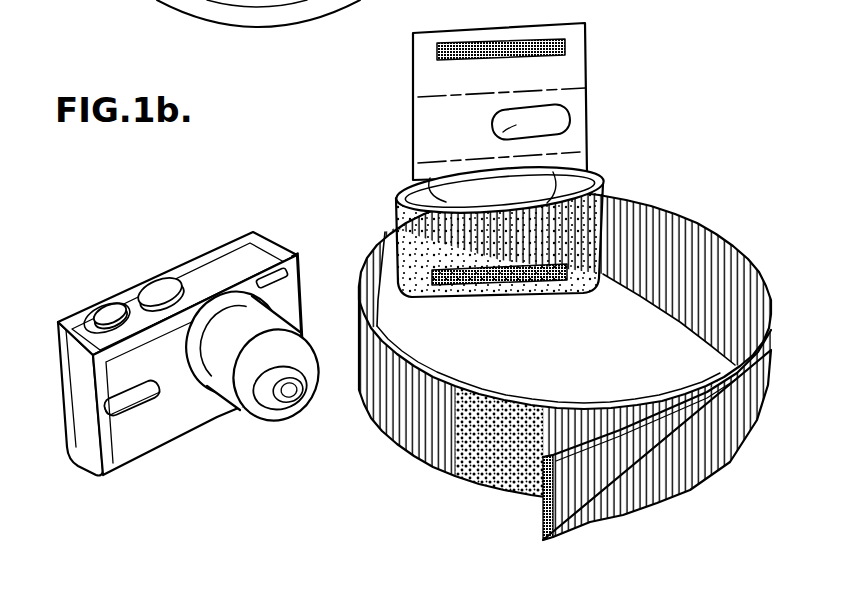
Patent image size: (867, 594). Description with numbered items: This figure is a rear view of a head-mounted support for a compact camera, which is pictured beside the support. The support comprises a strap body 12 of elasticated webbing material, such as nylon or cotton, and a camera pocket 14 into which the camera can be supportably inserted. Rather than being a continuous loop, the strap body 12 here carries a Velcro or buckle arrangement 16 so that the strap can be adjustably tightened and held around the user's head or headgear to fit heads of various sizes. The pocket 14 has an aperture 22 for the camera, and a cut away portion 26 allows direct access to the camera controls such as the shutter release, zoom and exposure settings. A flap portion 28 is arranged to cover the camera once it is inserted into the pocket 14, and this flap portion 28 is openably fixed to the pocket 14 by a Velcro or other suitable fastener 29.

The strap body 12 is at (565, 361).
The camera pocket 14 is at (518, 226).
The Velcro or buckle arrangement 16 is at (490, 492).
The aperture 22 is at (465, 192).
The cut away portion 26 is at (513, 125).
The flap portion 28 is at (511, 101).
The fastener 29 is at (460, 62).